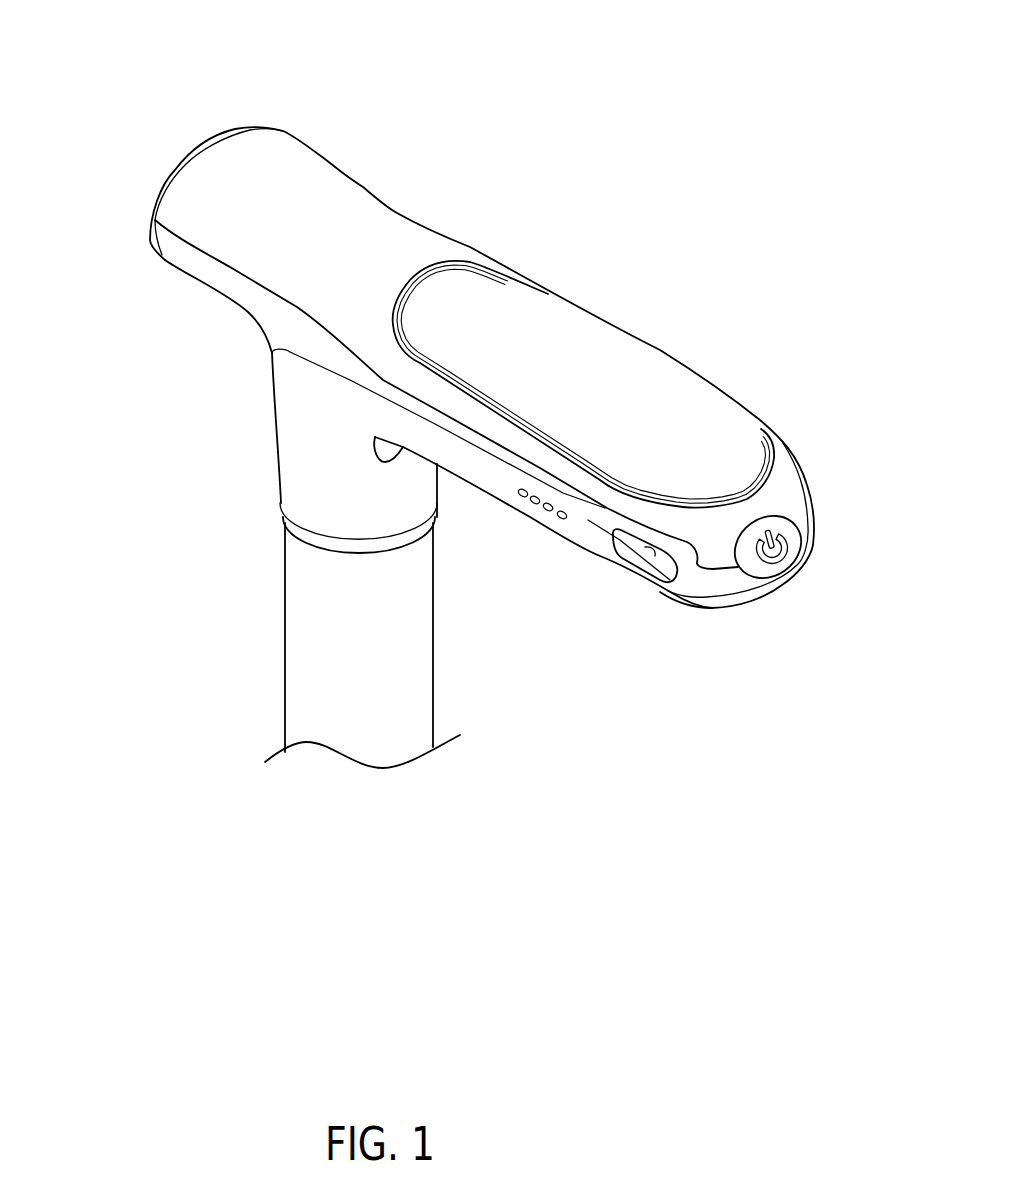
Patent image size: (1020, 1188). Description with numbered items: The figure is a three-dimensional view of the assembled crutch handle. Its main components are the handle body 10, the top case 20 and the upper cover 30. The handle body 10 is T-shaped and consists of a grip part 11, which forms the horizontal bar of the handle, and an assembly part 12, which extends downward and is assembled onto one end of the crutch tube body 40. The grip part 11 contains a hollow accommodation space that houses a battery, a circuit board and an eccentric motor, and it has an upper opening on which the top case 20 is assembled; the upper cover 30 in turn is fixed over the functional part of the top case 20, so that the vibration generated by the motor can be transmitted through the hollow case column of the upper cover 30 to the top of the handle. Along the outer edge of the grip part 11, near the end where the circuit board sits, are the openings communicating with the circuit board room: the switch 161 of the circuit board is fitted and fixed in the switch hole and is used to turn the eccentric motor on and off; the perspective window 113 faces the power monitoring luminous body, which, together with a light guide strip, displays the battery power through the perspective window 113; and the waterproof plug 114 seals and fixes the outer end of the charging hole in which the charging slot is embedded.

The handle body 10 is at (178, 328).
The grip part 11 is at (187, 256).
The assembly part 12 is at (308, 493).
The top case 20 is at (420, 155).
The upper cover 30 is at (625, 323).
The crutch tube body 40 is at (333, 667).
The perspective window 113 is at (557, 517).
The waterproof plug 114 is at (632, 557).
The switch 161 is at (790, 556).